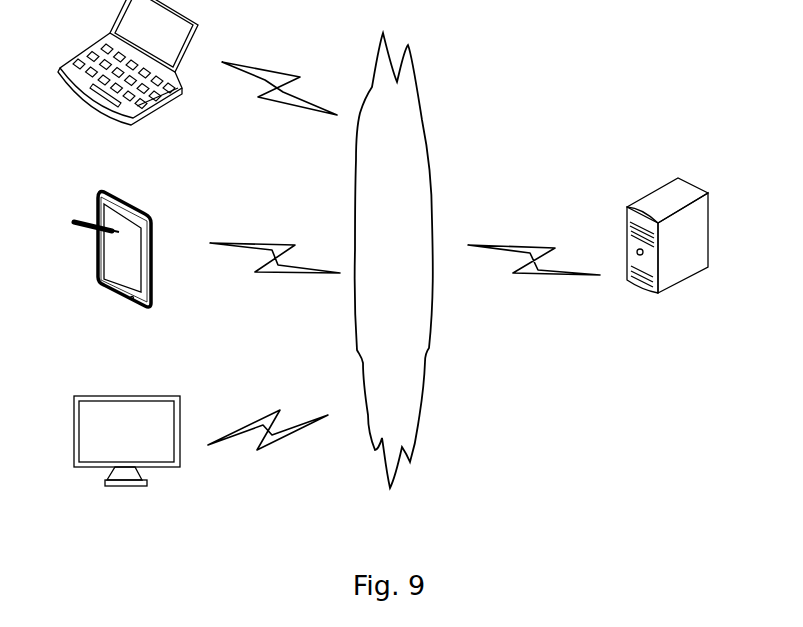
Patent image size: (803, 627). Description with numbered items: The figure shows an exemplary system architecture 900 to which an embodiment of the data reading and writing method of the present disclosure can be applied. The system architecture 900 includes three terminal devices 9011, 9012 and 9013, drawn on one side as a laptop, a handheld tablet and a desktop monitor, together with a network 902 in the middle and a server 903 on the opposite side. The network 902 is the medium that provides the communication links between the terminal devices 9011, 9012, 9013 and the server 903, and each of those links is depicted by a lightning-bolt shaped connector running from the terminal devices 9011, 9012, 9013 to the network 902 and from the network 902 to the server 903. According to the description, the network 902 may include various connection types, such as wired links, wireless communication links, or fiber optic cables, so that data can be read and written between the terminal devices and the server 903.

The system architecture 900 is at (643, 65).
The terminal device 9011 is at (128, 84).
The terminal device 9012 is at (113, 271).
The terminal device 9013 is at (127, 463).
The network 902 is at (394, 260).
The server 903 is at (667, 258).